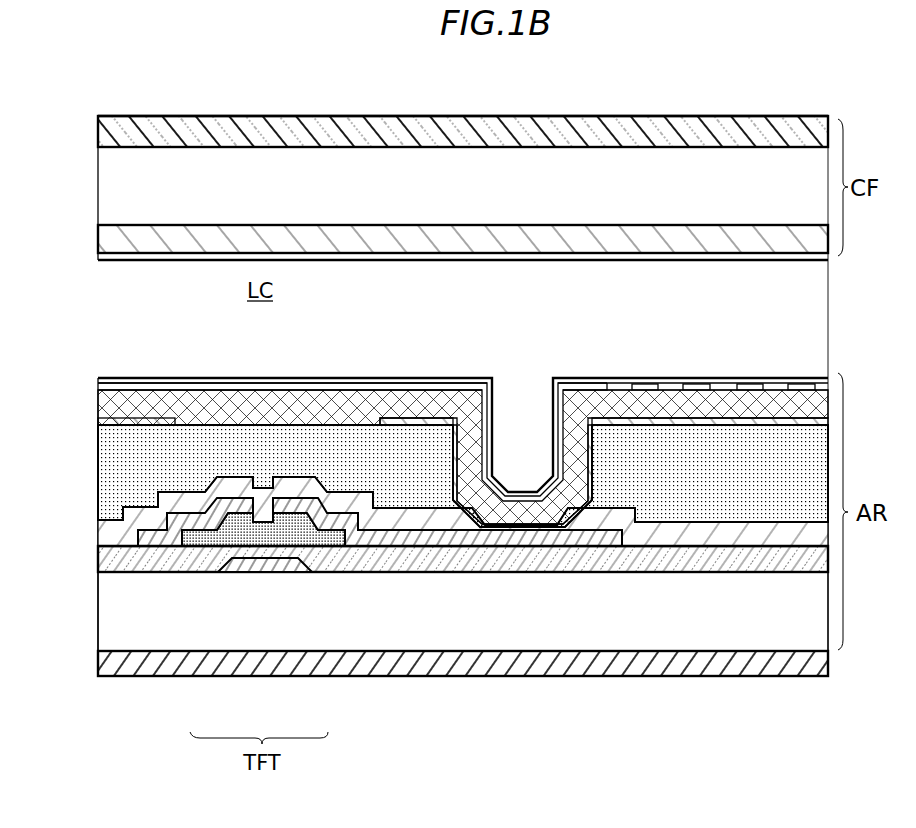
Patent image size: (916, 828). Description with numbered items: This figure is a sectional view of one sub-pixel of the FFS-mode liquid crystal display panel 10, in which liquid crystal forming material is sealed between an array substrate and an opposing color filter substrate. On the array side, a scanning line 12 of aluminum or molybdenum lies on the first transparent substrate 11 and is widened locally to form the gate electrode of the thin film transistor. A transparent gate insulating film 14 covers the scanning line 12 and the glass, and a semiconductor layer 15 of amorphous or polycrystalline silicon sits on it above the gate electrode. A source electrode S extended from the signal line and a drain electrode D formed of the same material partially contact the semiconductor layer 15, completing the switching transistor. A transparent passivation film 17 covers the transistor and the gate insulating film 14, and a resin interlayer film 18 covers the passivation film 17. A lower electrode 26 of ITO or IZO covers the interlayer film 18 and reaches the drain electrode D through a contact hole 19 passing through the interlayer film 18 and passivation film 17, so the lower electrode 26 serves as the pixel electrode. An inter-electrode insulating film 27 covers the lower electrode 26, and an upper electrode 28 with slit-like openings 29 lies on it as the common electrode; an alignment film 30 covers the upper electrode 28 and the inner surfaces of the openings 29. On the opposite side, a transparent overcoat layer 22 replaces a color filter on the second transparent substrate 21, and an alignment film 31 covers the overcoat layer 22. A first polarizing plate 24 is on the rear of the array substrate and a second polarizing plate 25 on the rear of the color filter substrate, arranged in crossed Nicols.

The liquid crystal display panel 10 is at (137, 70).
The first transparent substrate 11 is at (790, 632).
The scanning line 12 is at (262, 562).
The gate insulating film 14 is at (565, 557).
The semiconductor layer 15 is at (238, 522).
The passivation film 17 is at (122, 535).
The interlayer film 18 is at (130, 455).
The contact hole 19 is at (523, 470).
The second transparent substrate 21 is at (737, 163).
The overcoat layer 22 is at (678, 240).
The first polarizing plate 24 is at (483, 677).
The second polarizing plate 25 is at (472, 115).
The lower electrode 26 is at (120, 418).
The inter-electrode insulating film 27 is at (773, 410).
The upper electrode 28 is at (445, 385).
The slit-like opening 29 is at (677, 388).
The alignment film 30 is at (362, 380).
The alignment film 31 is at (542, 261).
The source electrode S is at (183, 535).
The drain electrode D is at (353, 537).